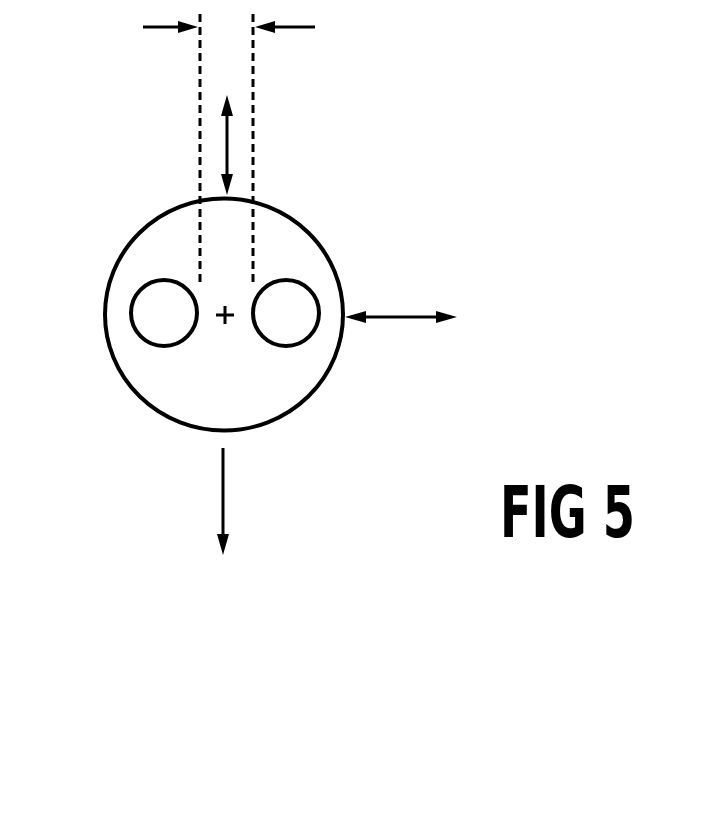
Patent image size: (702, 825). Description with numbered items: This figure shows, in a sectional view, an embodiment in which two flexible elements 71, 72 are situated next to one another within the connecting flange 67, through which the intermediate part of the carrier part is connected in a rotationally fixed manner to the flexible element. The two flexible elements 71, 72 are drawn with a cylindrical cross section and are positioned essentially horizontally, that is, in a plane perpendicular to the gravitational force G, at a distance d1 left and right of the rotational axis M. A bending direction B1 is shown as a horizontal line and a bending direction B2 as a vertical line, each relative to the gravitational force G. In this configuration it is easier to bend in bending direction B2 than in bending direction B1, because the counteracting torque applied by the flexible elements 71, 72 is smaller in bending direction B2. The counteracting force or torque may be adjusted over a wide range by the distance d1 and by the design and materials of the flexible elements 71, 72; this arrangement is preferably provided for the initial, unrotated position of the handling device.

The connecting flange 67 is at (158, 210).
The flexible element 71 is at (162, 312).
The flexible element 72 is at (287, 320).
The rotational axis M is at (218, 316).
The distance d1 is at (229, 142).
The bending direction B1 is at (400, 312).
The bending direction B2 is at (229, 145).
The gravitational force G is at (224, 487).